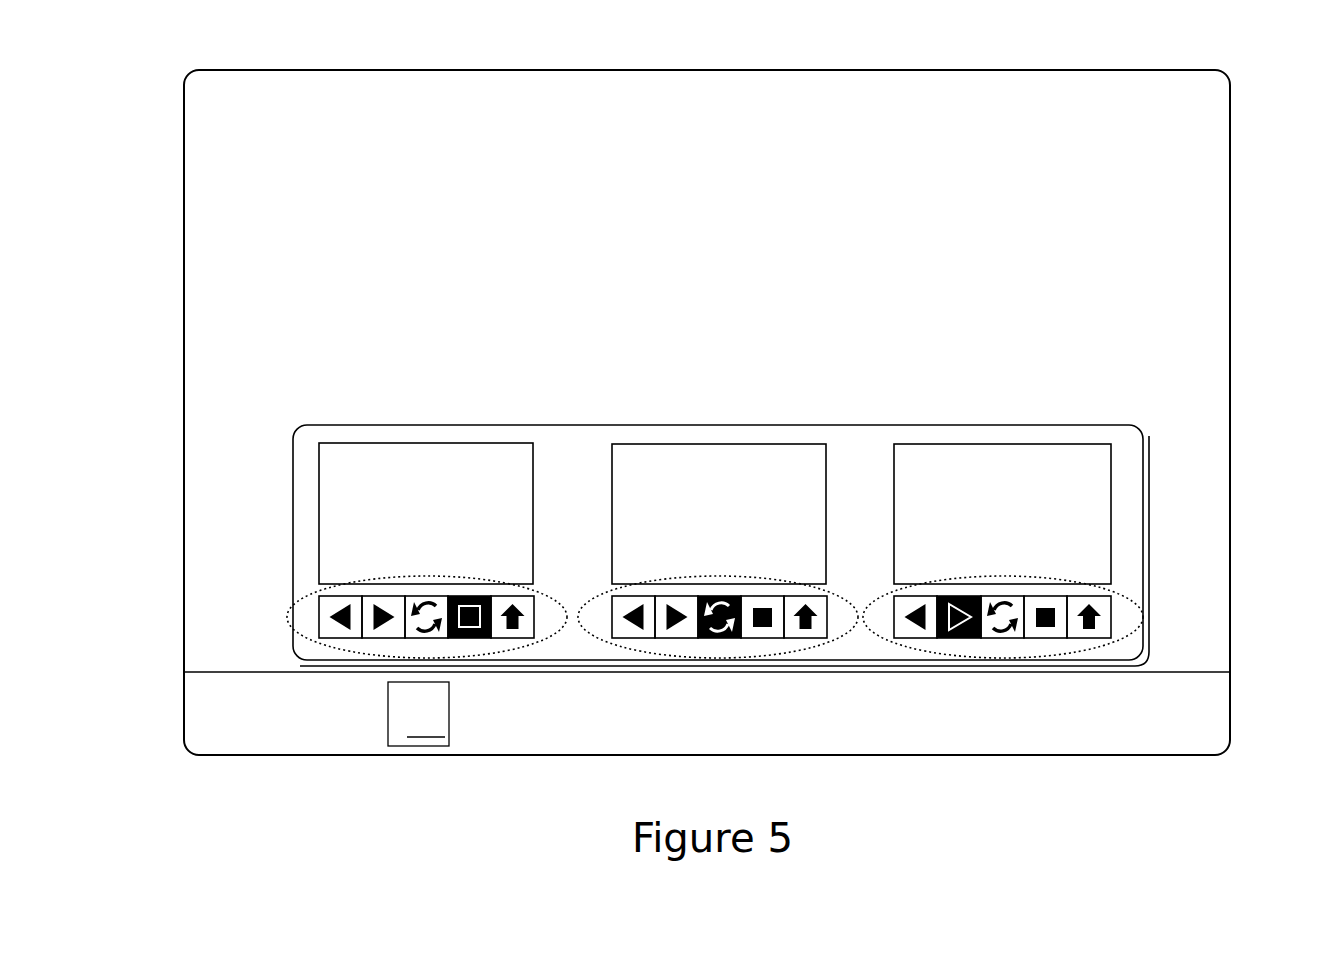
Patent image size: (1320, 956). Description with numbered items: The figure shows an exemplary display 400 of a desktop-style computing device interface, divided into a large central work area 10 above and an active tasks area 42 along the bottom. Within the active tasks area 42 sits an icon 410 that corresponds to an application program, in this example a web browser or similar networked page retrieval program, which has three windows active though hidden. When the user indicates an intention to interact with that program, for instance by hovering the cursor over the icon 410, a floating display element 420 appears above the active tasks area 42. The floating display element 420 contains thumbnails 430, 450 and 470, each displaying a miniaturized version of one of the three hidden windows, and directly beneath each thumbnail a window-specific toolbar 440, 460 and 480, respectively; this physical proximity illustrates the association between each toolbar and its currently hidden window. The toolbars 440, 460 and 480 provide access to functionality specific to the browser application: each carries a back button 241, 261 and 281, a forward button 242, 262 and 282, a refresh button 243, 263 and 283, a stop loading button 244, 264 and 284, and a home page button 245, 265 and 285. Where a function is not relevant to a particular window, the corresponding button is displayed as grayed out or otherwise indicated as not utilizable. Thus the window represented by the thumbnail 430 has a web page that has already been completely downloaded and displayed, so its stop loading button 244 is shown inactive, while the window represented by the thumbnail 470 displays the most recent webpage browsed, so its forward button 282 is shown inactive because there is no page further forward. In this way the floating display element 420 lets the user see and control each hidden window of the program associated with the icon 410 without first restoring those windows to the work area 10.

The work area 10 is at (1205, 262).
The display 400 is at (183, 157).
The active tasks area 42 is at (208, 727).
The icon 410 is at (418, 714).
The floating display element 420 is at (358, 425).
The thumbnail 430 is at (467, 445).
The thumbnail 450 is at (692, 446).
The thumbnail 470 is at (955, 446).
The toolbar 440 is at (555, 633).
The toolbar 460 is at (826, 643).
The toolbar 480 is at (1135, 626).
The back button 241 is at (343, 596).
The forward button 242 is at (387, 594).
The refresh button 243 is at (432, 594).
The stop loading button 244 is at (473, 594).
The home page button 245 is at (515, 594).
The back button 261 is at (640, 594).
The forward button 262 is at (680, 594).
The refresh button 263 is at (725, 594).
The stop loading button 264 is at (765, 594).
The home page button 265 is at (810, 594).
The back button 281 is at (923, 594).
The forward button 282 is at (963, 594).
The refresh button 283 is at (1008, 594).
The stop loading button 284 is at (1048, 594).
The home page button 285 is at (1095, 594).